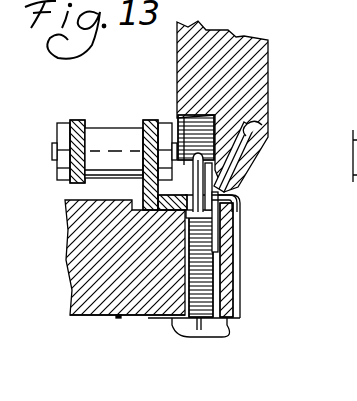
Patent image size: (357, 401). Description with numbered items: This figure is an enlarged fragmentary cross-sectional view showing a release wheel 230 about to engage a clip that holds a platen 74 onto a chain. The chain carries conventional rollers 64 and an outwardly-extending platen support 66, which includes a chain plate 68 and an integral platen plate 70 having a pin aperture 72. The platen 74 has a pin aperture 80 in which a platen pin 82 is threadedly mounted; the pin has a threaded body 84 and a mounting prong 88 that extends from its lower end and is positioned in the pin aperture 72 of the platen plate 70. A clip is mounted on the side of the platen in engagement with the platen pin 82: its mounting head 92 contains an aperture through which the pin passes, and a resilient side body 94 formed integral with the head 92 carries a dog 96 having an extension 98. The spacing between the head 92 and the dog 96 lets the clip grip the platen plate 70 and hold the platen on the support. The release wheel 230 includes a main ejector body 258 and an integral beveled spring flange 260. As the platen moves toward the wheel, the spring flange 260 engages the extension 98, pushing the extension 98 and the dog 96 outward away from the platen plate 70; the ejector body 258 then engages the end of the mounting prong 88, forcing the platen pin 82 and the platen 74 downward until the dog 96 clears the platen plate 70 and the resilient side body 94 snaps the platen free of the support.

The release wheel 230 is at (222, 100).
The main ejector body 258 is at (190, 115).
The mounting prong 88 is at (183, 165).
The roller 64 is at (90, 125).
The chain plate 68 is at (132, 128).
The platen support 66 is at (140, 186).
The threaded body 84 is at (185, 262).
The platen 74 is at (118, 320).
The mounting head 92 is at (162, 319).
The resilient side body 94 is at (238, 263).
The pin aperture 80 is at (205, 290).
The platen pin 82 is at (208, 332).
The pin aperture 72 is at (220, 206).
The platen plate 70 is at (230, 205).
The dog 96 is at (225, 188).
The extension 98 is at (238, 157).
The beveled spring flange 260 is at (252, 132).